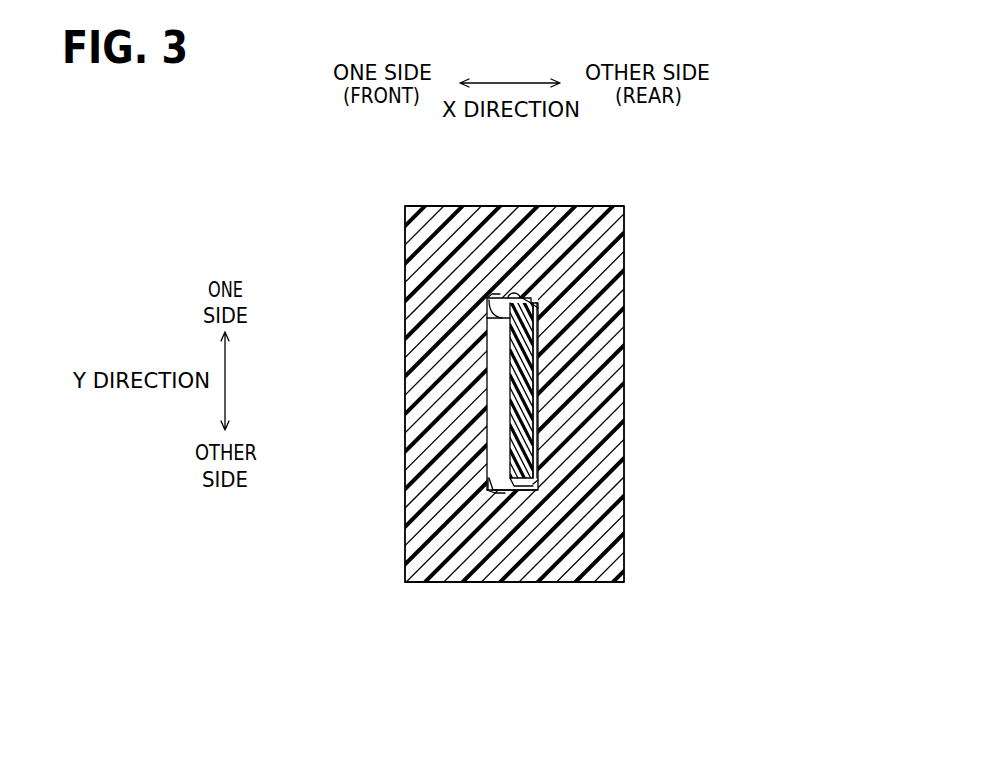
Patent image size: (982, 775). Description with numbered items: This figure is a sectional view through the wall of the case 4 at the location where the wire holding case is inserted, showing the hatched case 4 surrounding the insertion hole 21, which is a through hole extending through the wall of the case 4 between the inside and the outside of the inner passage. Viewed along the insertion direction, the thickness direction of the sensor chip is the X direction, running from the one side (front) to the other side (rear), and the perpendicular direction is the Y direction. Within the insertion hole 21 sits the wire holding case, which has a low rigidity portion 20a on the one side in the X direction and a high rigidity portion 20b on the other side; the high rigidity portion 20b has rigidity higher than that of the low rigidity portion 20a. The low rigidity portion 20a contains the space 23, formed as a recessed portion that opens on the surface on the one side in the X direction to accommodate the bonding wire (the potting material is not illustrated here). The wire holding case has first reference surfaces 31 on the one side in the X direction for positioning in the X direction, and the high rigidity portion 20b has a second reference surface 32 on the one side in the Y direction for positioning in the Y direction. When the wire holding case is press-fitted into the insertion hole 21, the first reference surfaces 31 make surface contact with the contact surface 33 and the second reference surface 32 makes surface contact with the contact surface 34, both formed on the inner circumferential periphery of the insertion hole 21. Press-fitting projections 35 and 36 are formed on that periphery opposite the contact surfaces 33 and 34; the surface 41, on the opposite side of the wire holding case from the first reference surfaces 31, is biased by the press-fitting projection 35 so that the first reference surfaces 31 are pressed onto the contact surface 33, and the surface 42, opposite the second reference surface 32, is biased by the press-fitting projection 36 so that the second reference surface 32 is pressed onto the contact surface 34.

The case 4 is at (610, 371).
The low rigidity portion 20a is at (489, 490).
The high rigidity portion 20b is at (525, 426).
The insertion hole 21 is at (497, 327).
The space 23 is at (498, 416).
The first reference surfaces 31 is at (500, 316).
The second reference surface 32 is at (527, 296).
The contact surface 33 is at (489, 297).
The contact surface 34 is at (515, 296).
The press-fitting projection 35 is at (538, 306).
The press-fitting projection 36 is at (518, 489).
The surface 41 is at (538, 318).
The surface 42 is at (502, 490).